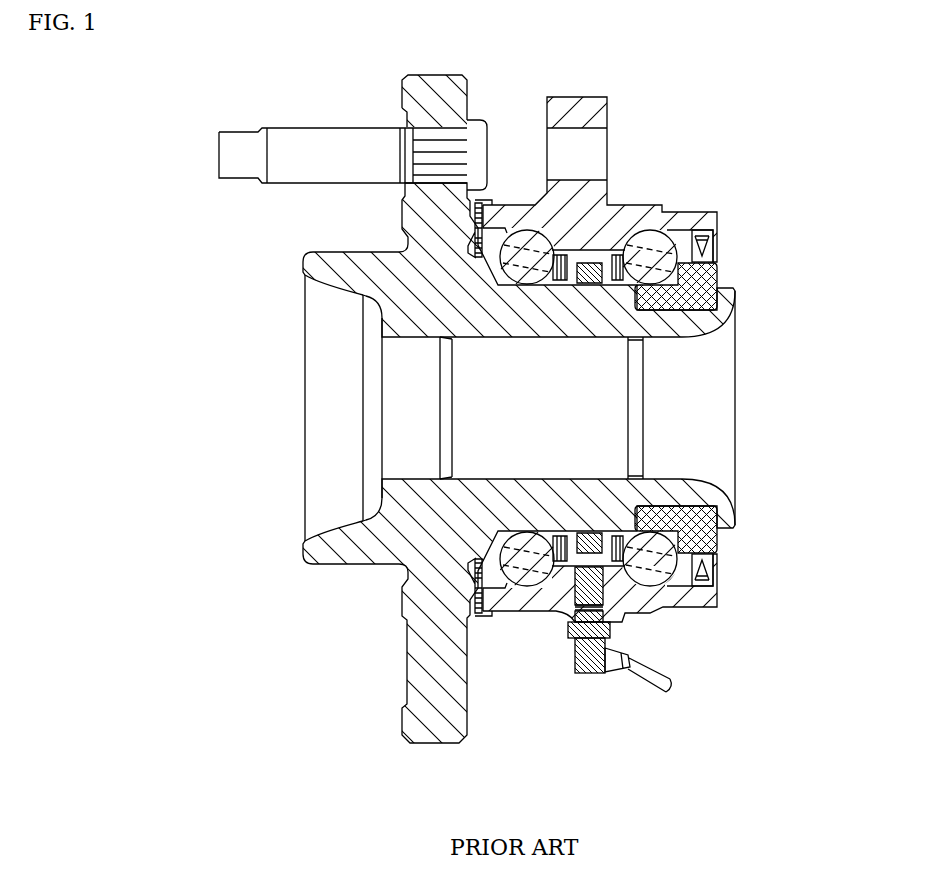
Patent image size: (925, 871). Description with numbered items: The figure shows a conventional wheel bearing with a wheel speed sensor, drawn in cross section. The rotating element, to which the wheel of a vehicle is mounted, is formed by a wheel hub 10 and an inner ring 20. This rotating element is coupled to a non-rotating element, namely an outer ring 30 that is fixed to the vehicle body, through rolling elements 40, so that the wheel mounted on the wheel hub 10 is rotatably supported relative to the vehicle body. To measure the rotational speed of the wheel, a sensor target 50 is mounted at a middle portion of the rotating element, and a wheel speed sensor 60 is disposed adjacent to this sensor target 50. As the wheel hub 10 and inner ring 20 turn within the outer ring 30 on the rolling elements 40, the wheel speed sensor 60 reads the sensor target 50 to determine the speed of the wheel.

The wheel hub 10 is at (338, 260).
The inner ring 20 is at (717, 270).
The outer ring 30 is at (623, 217).
The rolling elements 40 is at (583, 340).
The sensor target 50 is at (643, 483).
The wheel speed sensor 60 is at (603, 588).